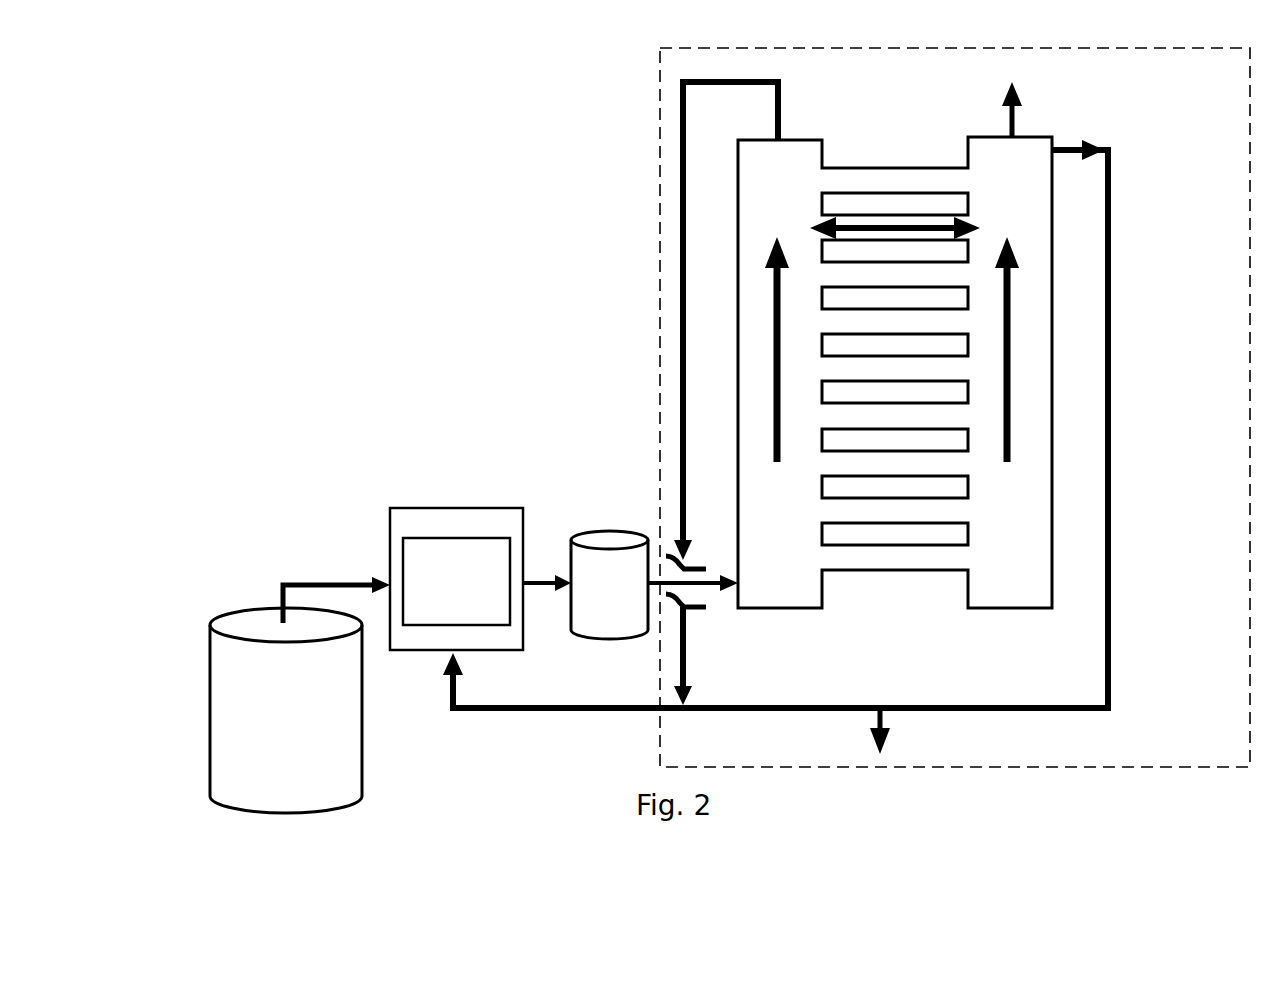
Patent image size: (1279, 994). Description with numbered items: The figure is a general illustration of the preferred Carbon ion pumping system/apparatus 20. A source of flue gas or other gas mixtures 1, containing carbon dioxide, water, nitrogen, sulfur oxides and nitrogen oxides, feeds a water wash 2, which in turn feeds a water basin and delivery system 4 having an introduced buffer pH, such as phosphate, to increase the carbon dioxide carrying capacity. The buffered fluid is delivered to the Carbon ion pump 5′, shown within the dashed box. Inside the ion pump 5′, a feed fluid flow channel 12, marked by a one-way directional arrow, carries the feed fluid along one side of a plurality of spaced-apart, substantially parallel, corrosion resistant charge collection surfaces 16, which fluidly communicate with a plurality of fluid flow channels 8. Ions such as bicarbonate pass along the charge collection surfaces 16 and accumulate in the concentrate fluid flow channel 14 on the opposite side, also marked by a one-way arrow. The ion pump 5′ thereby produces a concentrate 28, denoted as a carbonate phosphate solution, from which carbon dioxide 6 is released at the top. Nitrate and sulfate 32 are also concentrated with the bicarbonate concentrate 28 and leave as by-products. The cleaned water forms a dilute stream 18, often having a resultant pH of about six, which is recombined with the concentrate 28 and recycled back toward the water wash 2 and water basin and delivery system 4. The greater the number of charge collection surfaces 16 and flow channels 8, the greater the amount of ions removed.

The Carbon ion pumping system/apparatus 20 is at (318, 115).
The source of flue gas 1 is at (262, 625).
The water wash 2 is at (452, 508).
The water basin and delivery system 4 is at (612, 540).
The Carbon ion pump 5′ is at (660, 178).
The carbon dioxide 6 is at (1014, 115).
The fluid flow channels 8 is at (897, 188).
The feed fluid flow channel 12 is at (777, 348).
The concentrate fluid flow channel 14 is at (1007, 388).
The charge collection surfaces 16 is at (895, 369).
The dilute stream 18 is at (778, 140).
The concentrate 28 is at (1090, 150).
The nitrate and sulfate 32 is at (885, 722).